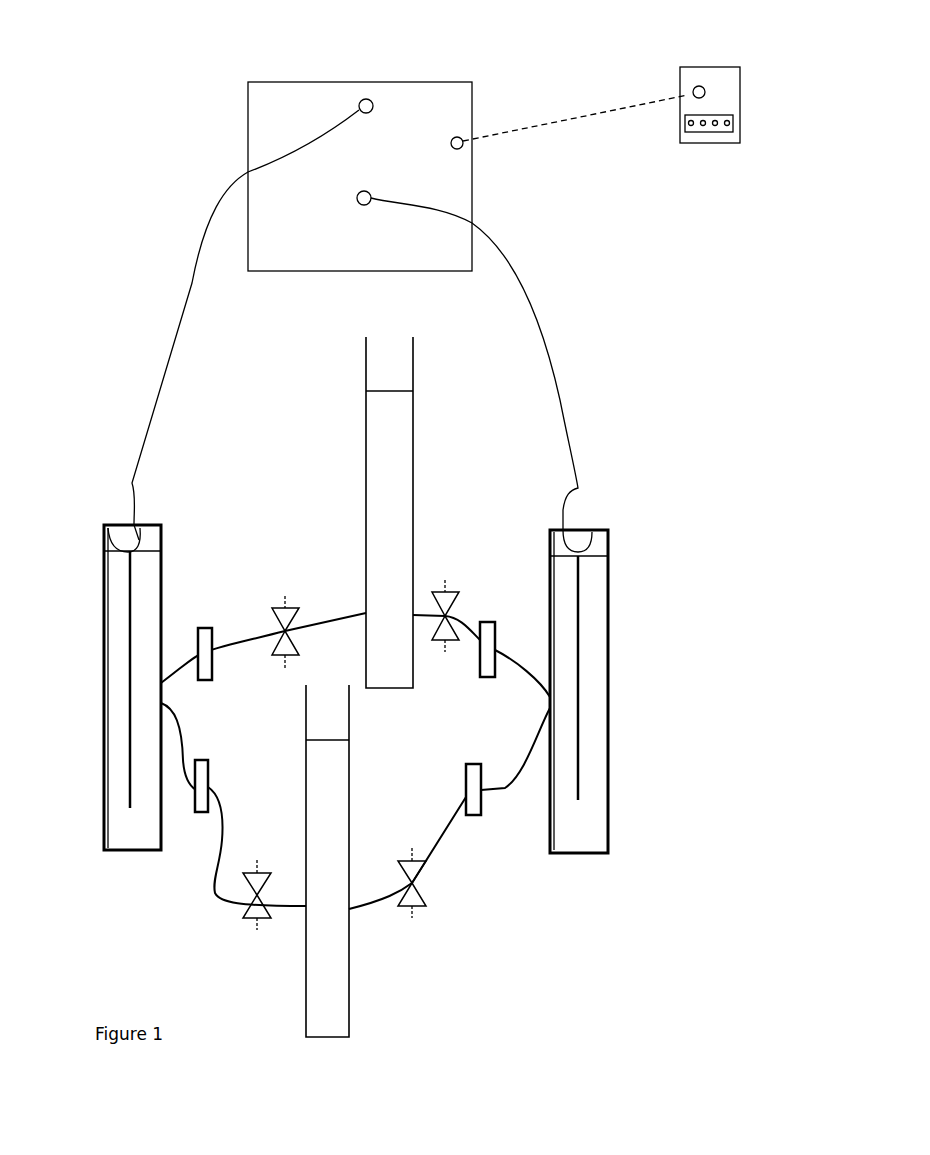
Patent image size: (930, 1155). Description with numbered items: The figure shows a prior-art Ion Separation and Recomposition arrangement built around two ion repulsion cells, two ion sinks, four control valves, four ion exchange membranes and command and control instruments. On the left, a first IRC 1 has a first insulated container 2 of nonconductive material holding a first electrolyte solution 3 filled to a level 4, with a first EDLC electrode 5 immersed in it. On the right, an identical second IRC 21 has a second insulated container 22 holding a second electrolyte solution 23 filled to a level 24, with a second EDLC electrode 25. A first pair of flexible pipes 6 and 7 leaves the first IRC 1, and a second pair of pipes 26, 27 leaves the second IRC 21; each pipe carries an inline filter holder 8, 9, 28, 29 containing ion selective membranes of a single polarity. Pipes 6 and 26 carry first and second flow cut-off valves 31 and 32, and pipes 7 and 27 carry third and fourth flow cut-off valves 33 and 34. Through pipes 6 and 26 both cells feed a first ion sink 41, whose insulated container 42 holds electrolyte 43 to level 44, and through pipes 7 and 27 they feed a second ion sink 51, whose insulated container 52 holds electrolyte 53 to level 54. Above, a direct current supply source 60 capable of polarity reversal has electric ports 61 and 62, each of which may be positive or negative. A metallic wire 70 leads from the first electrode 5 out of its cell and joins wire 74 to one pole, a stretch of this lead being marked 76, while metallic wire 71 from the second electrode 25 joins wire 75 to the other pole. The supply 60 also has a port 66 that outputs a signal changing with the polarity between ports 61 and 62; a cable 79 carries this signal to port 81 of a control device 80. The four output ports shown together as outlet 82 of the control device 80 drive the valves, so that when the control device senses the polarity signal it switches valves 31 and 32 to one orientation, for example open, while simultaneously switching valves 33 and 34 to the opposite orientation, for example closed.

The first IRC 1 is at (101, 701).
The first insulated container 2 is at (103, 712).
The first electrolyte solution 3 is at (118, 635).
The level 4 is at (115, 552).
The first EDLC electrode 5 is at (128, 678).
The pipe 6 is at (250, 642).
The pipe 7 is at (208, 885).
The inline filter holder 8 is at (200, 628).
The inline filter holder 9 is at (203, 758).
The second IRC 21 is at (608, 706).
The second insulated container 22 is at (625, 700).
The second electrolyte solution 23 is at (590, 625).
The level 24 is at (595, 553).
The second EDLC electrode 25 is at (580, 770).
The pipe 26 is at (517, 658).
The pipe 27 is at (443, 865).
The inline filter holder 28 is at (482, 620).
The inline filter holder 29 is at (482, 805).
The first flow cut-off valve 31 is at (277, 607).
The second flow cut-off valve 32 is at (445, 580).
The third flow cut-off valve 33 is at (250, 862).
The fourth flow cut-off valve 34 is at (410, 848).
The first ion sink 41 is at (385, 535).
The third insulated container 42 is at (366, 476).
The electrolyte 43 is at (395, 668).
The level 44 is at (400, 390).
The second ion sink 51 is at (319, 888).
The insulated container 52 is at (306, 997).
The electrolyte 53 is at (333, 992).
The level 54 is at (320, 745).
The direct current electric current supply source 60 is at (255, 117).
The electric port 61 is at (374, 103).
The electric port 62 is at (356, 196).
The port 66 is at (462, 138).
The metallic wire 70 is at (135, 508).
The metallic wire 71 is at (548, 502).
The wire 74 is at (192, 283).
The wire 75 is at (518, 285).
The electrical line portion 76 is at (178, 400).
The cable 79 is at (592, 117).
The control device 80 is at (686, 79).
The port 81 is at (700, 86).
The outlet 82 is at (722, 115).